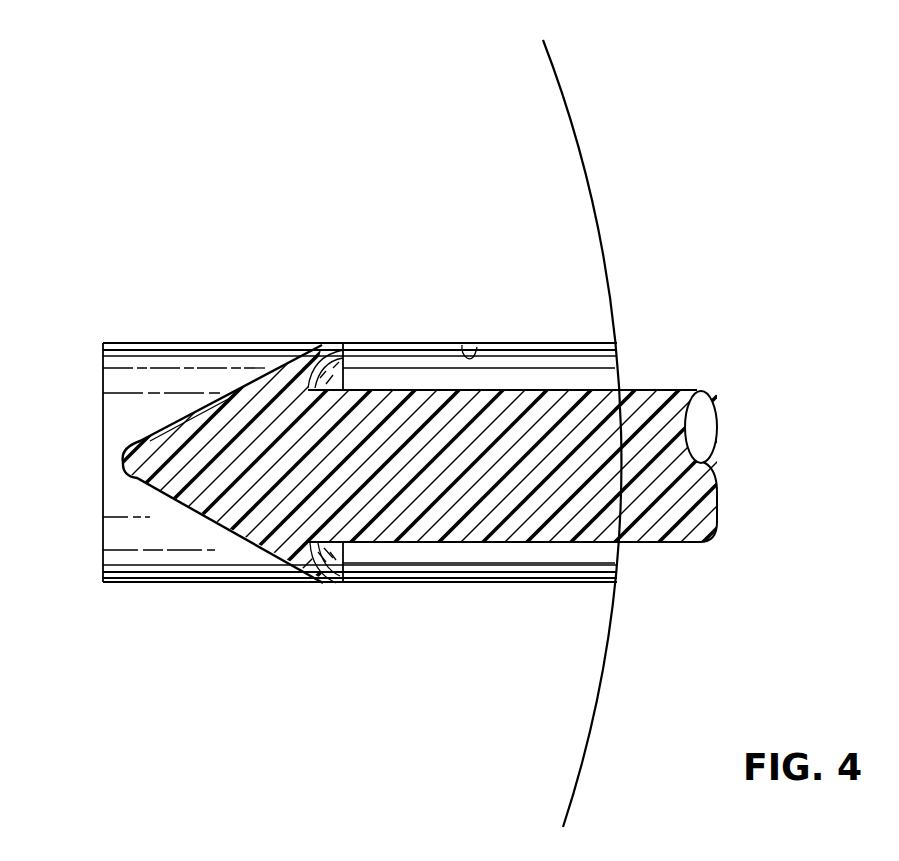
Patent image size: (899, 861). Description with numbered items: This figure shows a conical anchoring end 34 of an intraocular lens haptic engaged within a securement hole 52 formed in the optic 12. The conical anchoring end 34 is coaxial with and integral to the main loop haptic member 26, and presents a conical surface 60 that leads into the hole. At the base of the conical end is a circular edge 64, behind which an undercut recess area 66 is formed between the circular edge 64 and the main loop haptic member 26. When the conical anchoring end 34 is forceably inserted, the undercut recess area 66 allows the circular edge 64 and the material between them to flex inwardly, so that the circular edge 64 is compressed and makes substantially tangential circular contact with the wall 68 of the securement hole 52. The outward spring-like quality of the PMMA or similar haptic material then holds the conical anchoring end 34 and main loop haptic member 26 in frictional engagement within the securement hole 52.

The optic 12 is at (585, 158).
The main loop haptic member 26 is at (667, 390).
The conical anchoring end 34 is at (182, 326).
The securement hole 52 is at (532, 343).
The conical surface 60 is at (148, 434).
The circular edge 64 is at (343, 348).
The undercut recess area 66 is at (348, 366).
The wall 68 is at (477, 347).